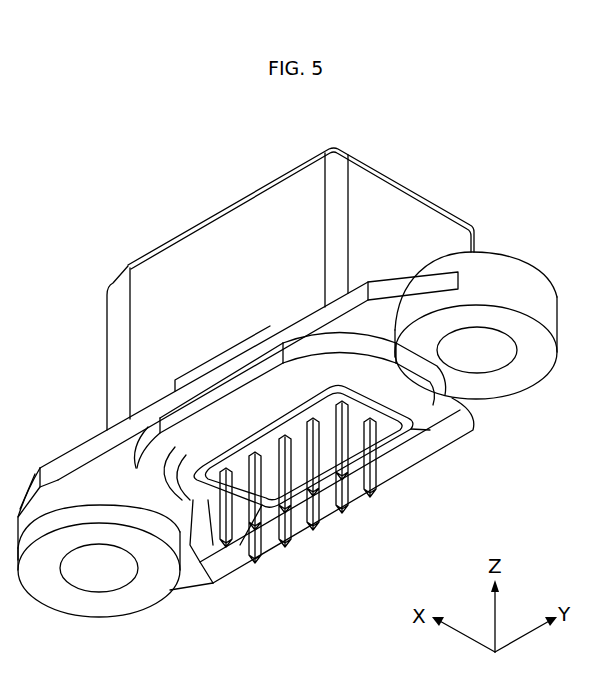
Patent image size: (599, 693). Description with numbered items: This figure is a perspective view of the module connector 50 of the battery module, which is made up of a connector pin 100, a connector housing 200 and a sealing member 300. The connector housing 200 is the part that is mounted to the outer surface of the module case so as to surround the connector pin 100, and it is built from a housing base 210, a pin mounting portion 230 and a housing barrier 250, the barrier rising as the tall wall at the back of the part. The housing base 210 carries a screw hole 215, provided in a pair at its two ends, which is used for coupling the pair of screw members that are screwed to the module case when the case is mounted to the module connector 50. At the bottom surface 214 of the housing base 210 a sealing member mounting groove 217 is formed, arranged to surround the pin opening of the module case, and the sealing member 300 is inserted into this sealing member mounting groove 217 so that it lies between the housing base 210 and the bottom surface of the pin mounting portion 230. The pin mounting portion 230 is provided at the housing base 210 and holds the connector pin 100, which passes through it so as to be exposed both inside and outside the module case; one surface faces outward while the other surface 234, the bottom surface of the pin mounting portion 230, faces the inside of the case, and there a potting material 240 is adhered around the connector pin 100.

The module connector 50 is at (62, 211).
The connector pin 100 is at (296, 565).
The connector housing 200 is at (499, 239).
The housing base 210 is at (392, 288).
The bottom surface of the housing base 214 is at (228, 563).
The screw hole 215 is at (482, 352).
The sealing member mounting groove 217 is at (359, 501).
The pin mounting portion 230 is at (421, 414).
The other surface of the pin mounting portion 234 is at (384, 431).
The potting material 240 is at (388, 444).
The housing barrier 250 is at (194, 219).
The sealing member 300 is at (213, 505).